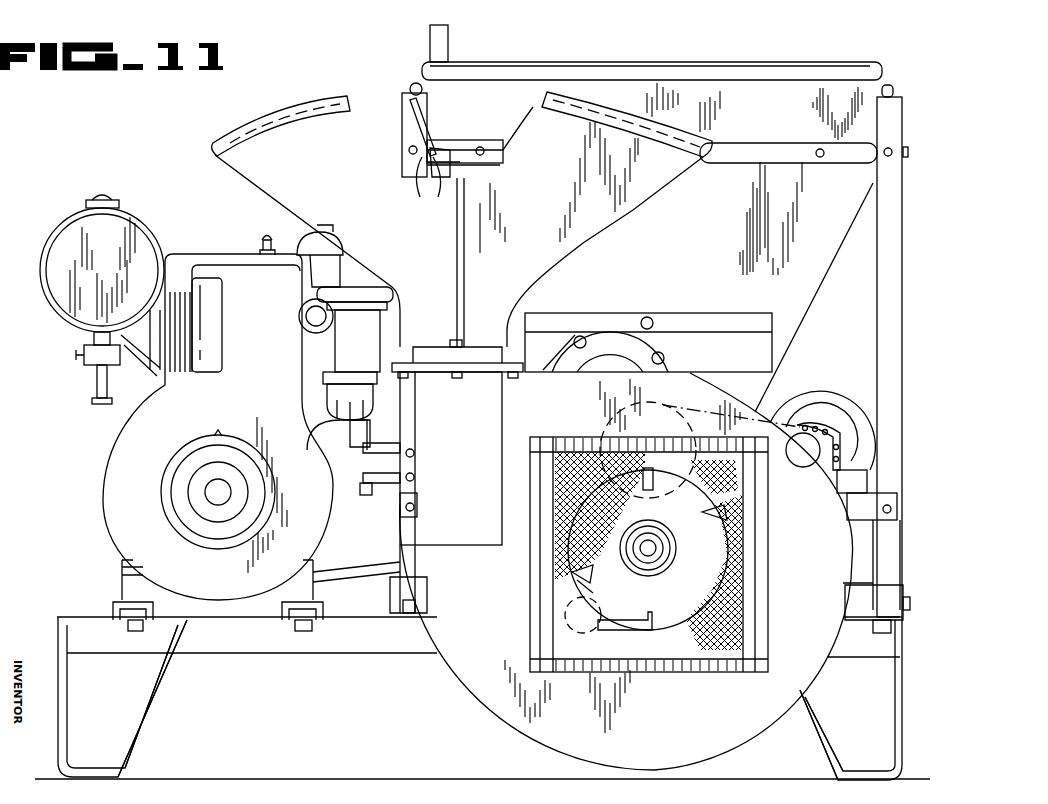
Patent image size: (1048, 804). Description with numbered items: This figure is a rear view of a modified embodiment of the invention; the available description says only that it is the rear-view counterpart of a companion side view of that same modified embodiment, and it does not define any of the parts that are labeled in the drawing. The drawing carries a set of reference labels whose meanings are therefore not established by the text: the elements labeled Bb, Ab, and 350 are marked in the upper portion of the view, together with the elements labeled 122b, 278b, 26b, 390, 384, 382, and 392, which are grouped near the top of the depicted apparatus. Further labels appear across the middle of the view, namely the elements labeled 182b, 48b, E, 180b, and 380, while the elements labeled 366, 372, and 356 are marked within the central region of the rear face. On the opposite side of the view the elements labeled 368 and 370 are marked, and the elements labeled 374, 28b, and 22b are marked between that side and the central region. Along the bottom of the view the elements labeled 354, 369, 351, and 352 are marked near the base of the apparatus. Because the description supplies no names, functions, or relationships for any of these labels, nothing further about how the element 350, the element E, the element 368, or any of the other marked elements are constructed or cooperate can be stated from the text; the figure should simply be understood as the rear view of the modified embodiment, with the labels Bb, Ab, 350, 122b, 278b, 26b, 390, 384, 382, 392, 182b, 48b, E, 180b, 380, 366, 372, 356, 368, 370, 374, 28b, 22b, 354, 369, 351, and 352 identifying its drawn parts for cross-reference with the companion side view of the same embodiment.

The hopper top frame bar Bb is at (742, 67).
The frame upright post Ab is at (895, 227).
The frame 350 is at (916, 101).
The stop post 122b is at (444, 33).
The hopper lip flap 278b is at (272, 110).
The hopper 26b is at (403, 127).
The deflector plate 390 is at (412, 93).
The pivot arm 384 is at (437, 158).
The latch 382 is at (462, 170).
The pivot pins 392 is at (424, 189).
The discharge chute housing 182b is at (430, 365).
The gear box housing 48b is at (596, 356).
The blower housing E is at (512, 725).
The drive chain drum 180b is at (753, 407).
The bearing housing 380 is at (849, 400).
The screen frame 366 is at (575, 572).
The impeller hub 372 is at (690, 510).
The impeller circle section 356 is at (663, 470).
The engine 368 is at (242, 409).
The engine flywheel 370 is at (216, 491).
The support bar 374 is at (355, 562).
The mounting bracket 28b is at (412, 495).
The mounting clip 22b is at (395, 603).
The base channel 354 is at (258, 652).
The mounting bolts 369 is at (132, 628).
The base frame 351 is at (292, 650).
The leg 352 is at (138, 745).